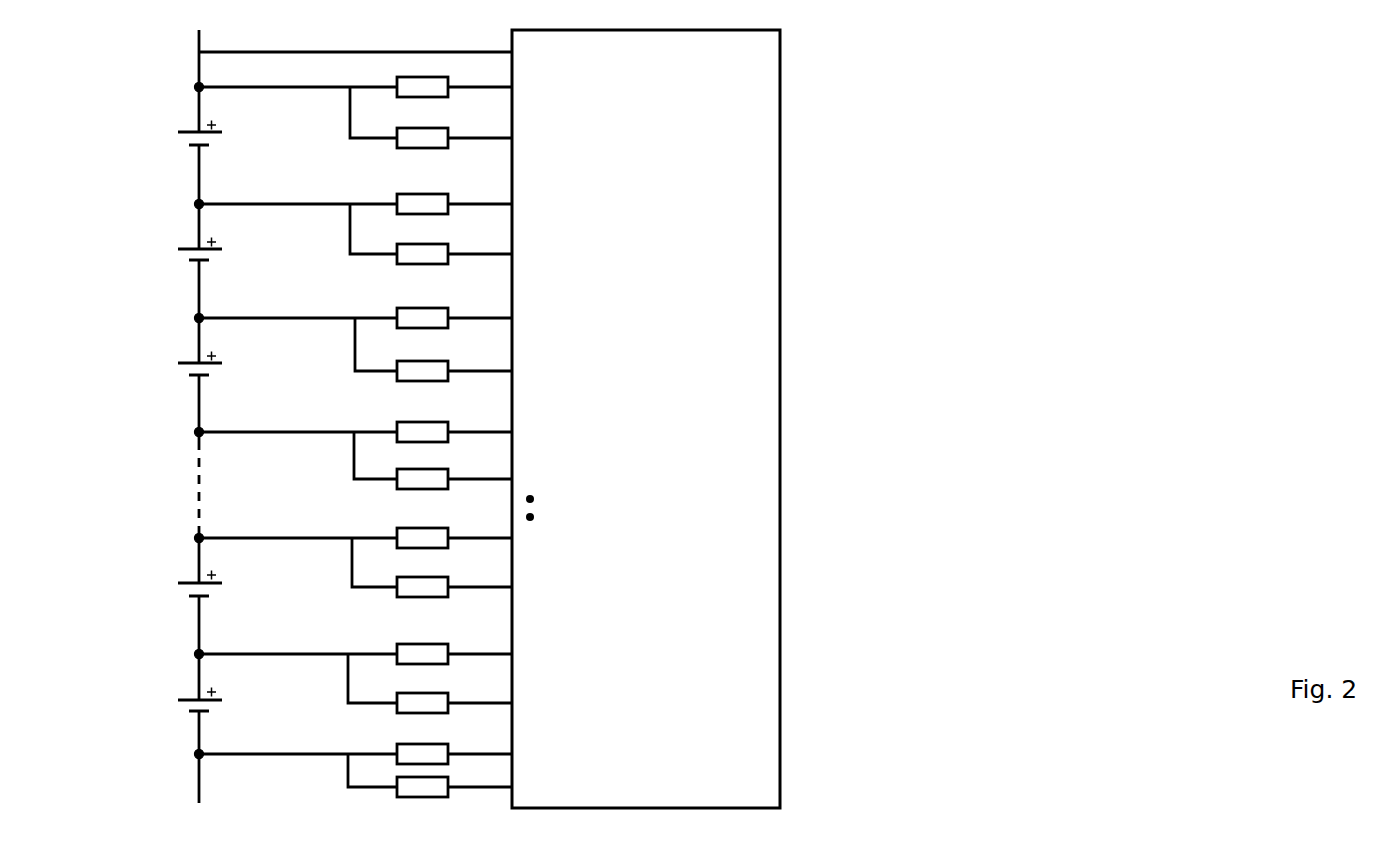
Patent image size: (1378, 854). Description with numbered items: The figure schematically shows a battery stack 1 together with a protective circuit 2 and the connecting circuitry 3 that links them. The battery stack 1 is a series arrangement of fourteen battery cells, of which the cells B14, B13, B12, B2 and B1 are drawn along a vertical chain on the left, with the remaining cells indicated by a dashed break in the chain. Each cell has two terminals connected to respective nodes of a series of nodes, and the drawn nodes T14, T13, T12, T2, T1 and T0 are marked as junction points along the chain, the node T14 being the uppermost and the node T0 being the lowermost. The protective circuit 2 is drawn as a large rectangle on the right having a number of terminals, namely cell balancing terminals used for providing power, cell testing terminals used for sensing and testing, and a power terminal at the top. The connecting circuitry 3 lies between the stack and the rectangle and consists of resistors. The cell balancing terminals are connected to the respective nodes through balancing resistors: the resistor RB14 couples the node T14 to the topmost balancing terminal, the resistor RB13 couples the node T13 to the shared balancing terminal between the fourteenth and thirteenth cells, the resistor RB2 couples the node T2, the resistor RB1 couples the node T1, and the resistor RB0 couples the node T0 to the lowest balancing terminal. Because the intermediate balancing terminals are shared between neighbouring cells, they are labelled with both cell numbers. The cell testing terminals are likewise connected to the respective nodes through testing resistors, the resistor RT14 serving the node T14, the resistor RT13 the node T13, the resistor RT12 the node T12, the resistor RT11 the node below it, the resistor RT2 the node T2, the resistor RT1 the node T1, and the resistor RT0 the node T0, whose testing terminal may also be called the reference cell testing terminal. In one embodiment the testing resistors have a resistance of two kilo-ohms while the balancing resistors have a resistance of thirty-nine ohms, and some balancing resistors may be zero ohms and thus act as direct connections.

The battery stack 1 is at (130, 222).
The protective circuit 2 is at (780, 681).
The connecting circuitry 3 is at (329, 244).
The battery cell B14 is at (178, 138).
The battery cell B13 is at (178, 254).
The battery cell B12 is at (178, 368).
The battery cell B2 is at (178, 589).
The battery cell B1 is at (178, 705).
The node T14 is at (198, 87).
The node T13 is at (198, 204).
The node T12 is at (198, 318).
The node T2 is at (198, 538).
The node T1 is at (198, 654).
The node T0 is at (196, 752).
The resistor RB14 is at (422, 77).
The resistor RT14 is at (422, 148).
The resistor RB13 is at (422, 193).
The resistor RT13 is at (422, 264).
The resistor RT12 is at (422, 381).
The resistor RT11 is at (422, 489).
The resistor RB2 is at (422, 528).
The resistor RT2 is at (422, 597).
The resistor RB1 is at (422, 644).
The resistor RT1 is at (422, 694).
The resistor RB0 is at (422, 745).
The resistor RT0 is at (422, 797).